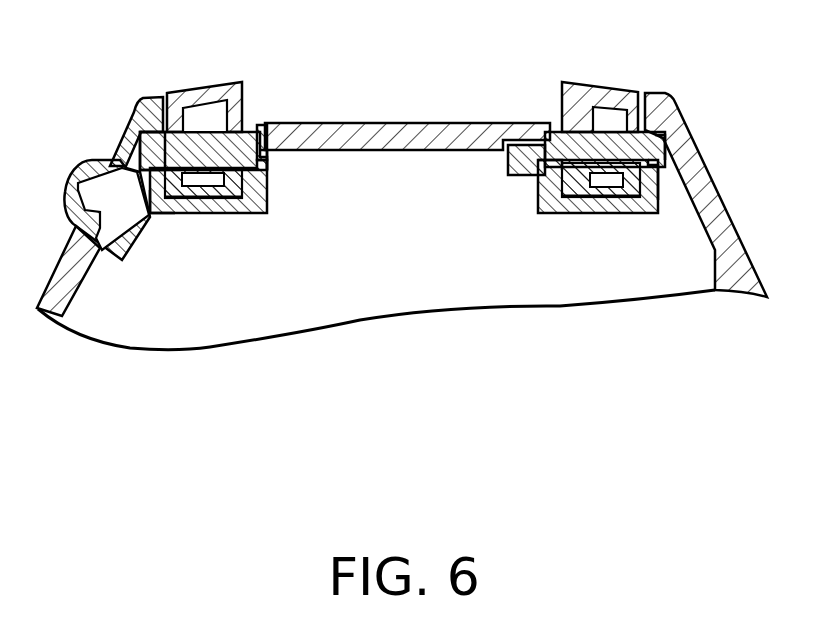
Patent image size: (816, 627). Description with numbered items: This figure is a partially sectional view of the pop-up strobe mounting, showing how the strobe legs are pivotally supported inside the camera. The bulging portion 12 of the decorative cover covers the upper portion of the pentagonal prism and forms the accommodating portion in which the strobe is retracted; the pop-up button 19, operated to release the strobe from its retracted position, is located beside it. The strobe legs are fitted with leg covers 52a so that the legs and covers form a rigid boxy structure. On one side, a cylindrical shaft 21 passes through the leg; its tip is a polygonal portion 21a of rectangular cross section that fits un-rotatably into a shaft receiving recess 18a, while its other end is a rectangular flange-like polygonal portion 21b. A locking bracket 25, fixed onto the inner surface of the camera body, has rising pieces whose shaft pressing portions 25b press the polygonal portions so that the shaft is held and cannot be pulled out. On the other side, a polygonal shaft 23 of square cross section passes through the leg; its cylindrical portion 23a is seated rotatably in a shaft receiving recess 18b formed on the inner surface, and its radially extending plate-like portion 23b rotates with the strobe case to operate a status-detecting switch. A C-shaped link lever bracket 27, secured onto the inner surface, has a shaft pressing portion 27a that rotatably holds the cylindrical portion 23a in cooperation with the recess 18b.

The bulging portion 12 is at (57, 293).
The shaft receiving recess 18a is at (143, 140).
The shaft receiving recess 18b is at (670, 110).
The pop-up button 19 is at (80, 185).
The cylindrical shaft 21 is at (230, 203).
The polygonal portion 21a is at (160, 222).
The polygonal portion 21b is at (256, 130).
The polygonal shaft 23 is at (612, 160).
The cylindrical portion 23a is at (665, 150).
The radially extending plate-like portion 23b is at (507, 172).
The locking bracket 25 is at (270, 198).
The shaft pressing portion 25b is at (143, 130).
The link lever bracket 27 is at (548, 197).
The shaft pressing portion 27a is at (527, 132).
The leg cover 52a is at (198, 92).